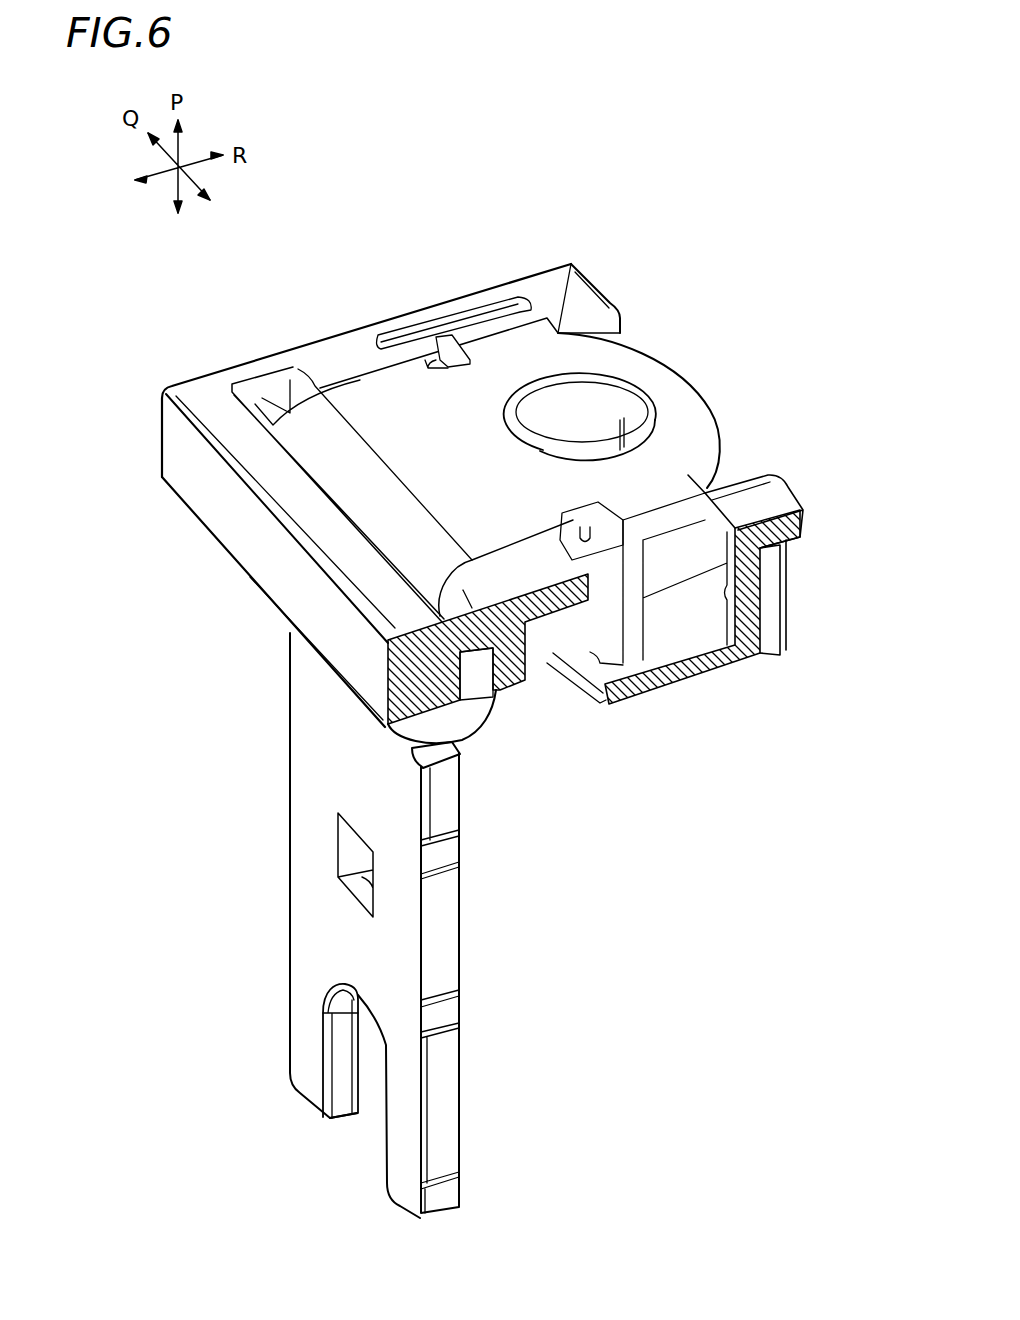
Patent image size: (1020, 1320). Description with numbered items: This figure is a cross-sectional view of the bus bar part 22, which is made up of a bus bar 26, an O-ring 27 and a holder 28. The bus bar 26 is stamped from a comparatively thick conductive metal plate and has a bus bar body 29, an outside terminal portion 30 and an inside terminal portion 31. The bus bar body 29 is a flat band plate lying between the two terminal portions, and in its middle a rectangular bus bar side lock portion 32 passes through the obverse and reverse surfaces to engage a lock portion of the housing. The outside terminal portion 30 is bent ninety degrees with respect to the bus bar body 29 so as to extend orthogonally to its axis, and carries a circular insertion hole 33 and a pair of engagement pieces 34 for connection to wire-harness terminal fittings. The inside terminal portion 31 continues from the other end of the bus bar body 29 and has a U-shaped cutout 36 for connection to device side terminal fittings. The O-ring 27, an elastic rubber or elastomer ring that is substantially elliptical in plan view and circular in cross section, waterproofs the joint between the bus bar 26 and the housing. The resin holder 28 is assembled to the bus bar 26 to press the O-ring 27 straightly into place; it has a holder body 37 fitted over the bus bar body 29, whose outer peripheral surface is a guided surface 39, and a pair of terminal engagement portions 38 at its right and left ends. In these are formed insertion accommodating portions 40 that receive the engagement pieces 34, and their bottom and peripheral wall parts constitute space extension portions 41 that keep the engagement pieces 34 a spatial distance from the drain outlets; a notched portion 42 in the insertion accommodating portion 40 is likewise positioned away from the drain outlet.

The bus bar part 22 is at (713, 164).
The bus bar 26 is at (316, 760).
The O-ring 27 is at (470, 720).
The holder 28 is at (207, 396).
The bus bar body 29 is at (310, 833).
The outside terminal portion 30 is at (707, 417).
The inside terminal portion 31 is at (310, 1028).
The bus bar side lock portion 32 is at (367, 880).
The insertion hole 33 is at (600, 400).
The engagement pieces 34 is at (488, 330).
The U-shaped cutout 36 is at (343, 1093).
The holder body 37 is at (210, 500).
The terminal engagement portions 38 is at (577, 291).
The guided surface 39 is at (253, 547).
The insertion accommodating portions 40 is at (410, 340).
The space extension portions 41 is at (734, 667).
The notched portion 42 is at (573, 640).